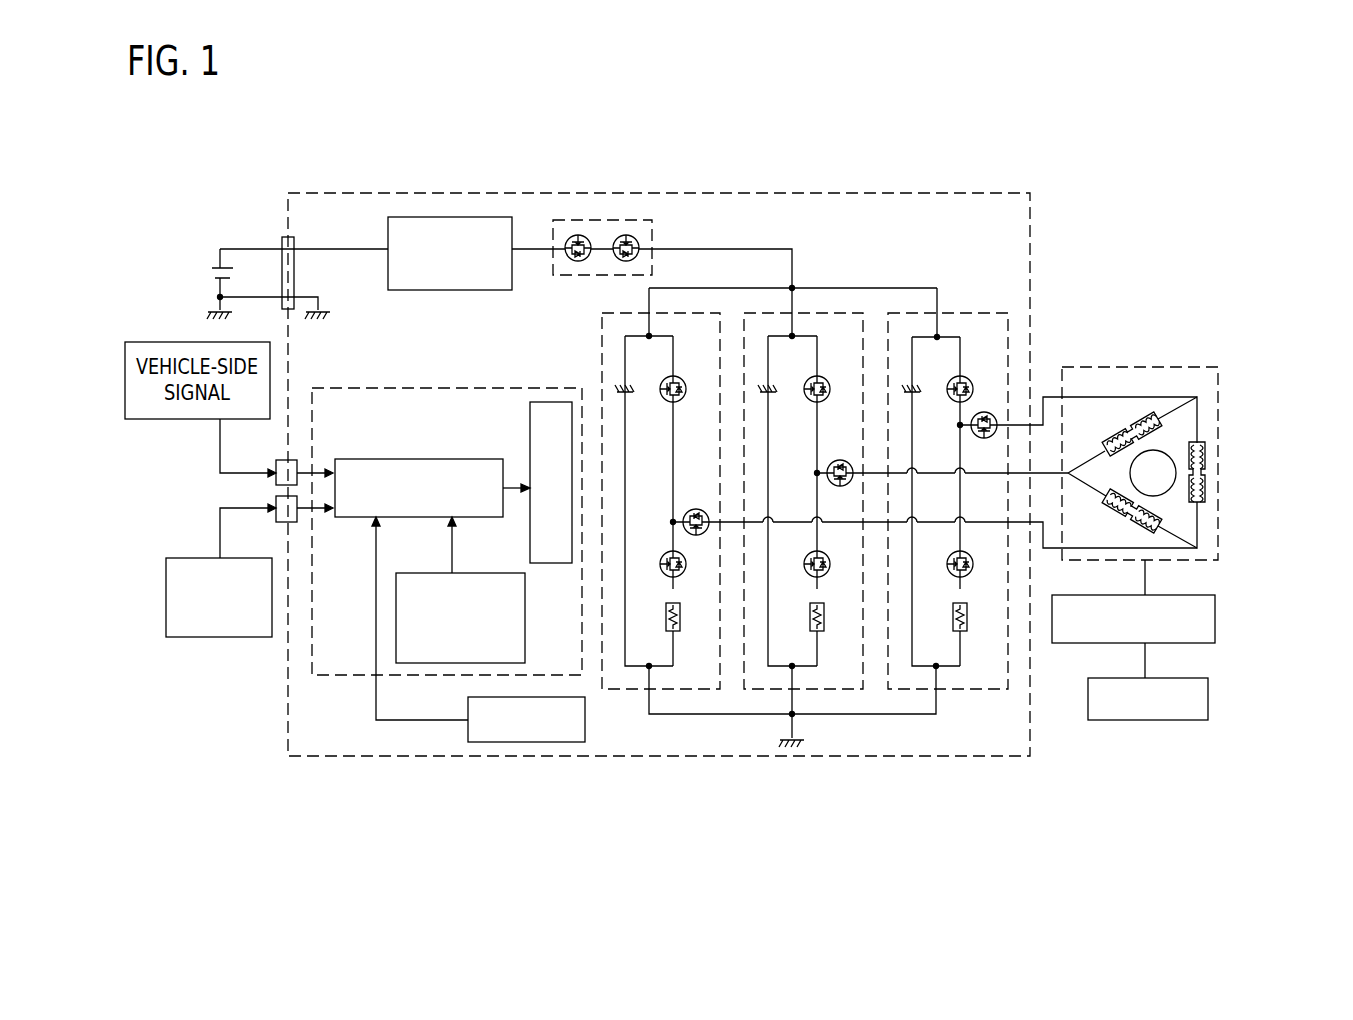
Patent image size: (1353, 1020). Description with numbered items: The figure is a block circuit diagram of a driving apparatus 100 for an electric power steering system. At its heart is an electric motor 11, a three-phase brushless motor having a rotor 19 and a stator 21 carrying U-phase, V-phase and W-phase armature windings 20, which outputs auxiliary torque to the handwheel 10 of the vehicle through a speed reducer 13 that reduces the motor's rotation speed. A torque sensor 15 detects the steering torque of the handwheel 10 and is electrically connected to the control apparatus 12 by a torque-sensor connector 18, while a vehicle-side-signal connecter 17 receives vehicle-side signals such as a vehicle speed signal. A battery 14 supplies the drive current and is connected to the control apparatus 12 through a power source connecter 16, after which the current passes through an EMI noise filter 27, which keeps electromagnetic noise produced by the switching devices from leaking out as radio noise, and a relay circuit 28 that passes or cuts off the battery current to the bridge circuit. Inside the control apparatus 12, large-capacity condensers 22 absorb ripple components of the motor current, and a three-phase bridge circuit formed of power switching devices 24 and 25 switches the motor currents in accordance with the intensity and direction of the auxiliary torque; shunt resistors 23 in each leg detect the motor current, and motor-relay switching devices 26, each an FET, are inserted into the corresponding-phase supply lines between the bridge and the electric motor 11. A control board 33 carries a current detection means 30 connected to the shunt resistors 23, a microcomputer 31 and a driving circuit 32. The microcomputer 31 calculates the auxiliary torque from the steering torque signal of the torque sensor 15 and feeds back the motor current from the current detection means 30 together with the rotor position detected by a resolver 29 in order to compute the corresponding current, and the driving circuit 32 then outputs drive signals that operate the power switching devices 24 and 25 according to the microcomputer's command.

The driving apparatus 100 is at (830, 117).
The handwheel 10 is at (1105, 722).
The electric motor 11 is at (1173, 367).
The control apparatus 12 is at (980, 193).
The speed reducer 13 is at (1215, 630).
The battery 14 is at (210, 268).
The torque sensor 15 is at (192, 638).
The power source connecter 16 is at (282, 238).
The vehicle-side-signal connecter 17 is at (275, 467).
The torque-sensor connector 18 is at (275, 497).
The rotor 19 is at (1158, 452).
The armature winding 20 is at (1208, 497).
The stator 21 is at (1183, 518).
The large-capacity condensers 22 is at (633, 397).
The shunt resistors 23 is at (680, 622).
The power switching devices 24 is at (658, 568).
The power switching devices 25 is at (684, 372).
The motor-relay switching devices 26 is at (987, 407).
The EMI noise filter 27 is at (421, 217).
The relay circuit 28 is at (579, 220).
The resolver 29 is at (467, 735).
The current detection means 30 is at (397, 643).
The microcomputer 31 is at (402, 460).
The driving circuit 32 is at (557, 400).
The control board 33 is at (367, 387).